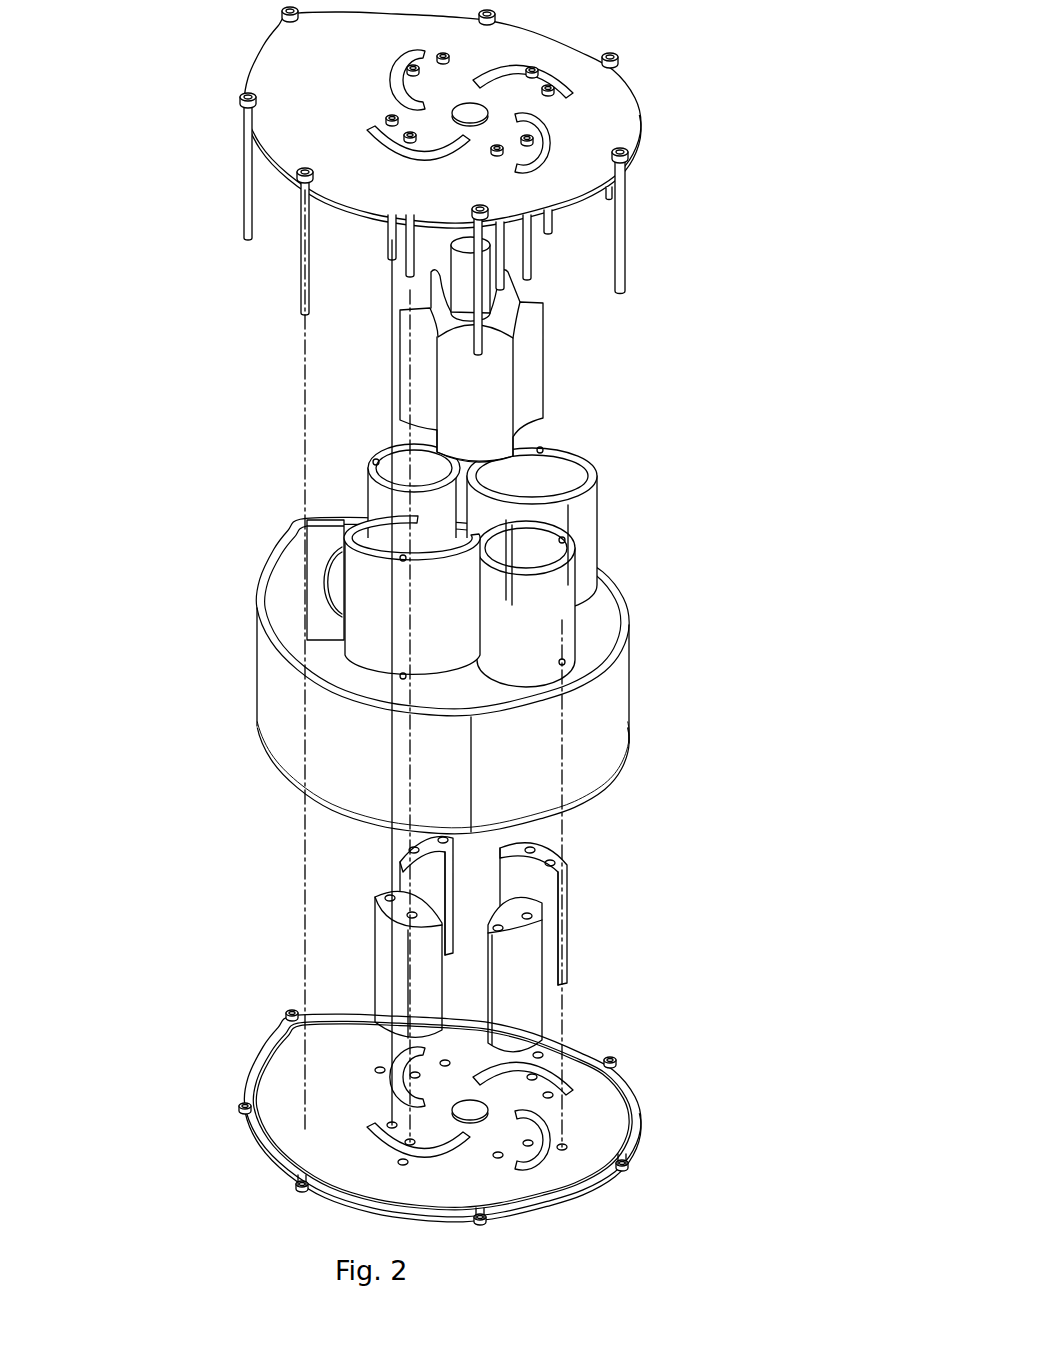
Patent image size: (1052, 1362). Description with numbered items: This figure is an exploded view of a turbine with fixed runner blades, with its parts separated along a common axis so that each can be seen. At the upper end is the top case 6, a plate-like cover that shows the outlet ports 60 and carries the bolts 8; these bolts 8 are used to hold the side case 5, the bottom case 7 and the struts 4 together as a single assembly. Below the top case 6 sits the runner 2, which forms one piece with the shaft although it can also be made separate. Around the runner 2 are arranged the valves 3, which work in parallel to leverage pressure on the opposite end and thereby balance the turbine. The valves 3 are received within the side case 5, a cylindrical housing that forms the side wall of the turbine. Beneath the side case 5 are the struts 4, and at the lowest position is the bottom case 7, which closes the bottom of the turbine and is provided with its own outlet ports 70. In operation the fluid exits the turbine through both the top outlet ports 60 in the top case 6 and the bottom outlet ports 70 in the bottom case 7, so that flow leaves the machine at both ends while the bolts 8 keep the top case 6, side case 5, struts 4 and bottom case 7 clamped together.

The runner 2 is at (525, 367).
The valves 3 is at (364, 466).
The struts 4 is at (375, 915).
The side case 5 is at (605, 736).
The top case 6 is at (540, 50).
The outlet ports 60 is at (548, 118).
The bottom case 7 is at (641, 1101).
The outlet ports 70 is at (437, 1162).
The bolts 8 is at (627, 240).